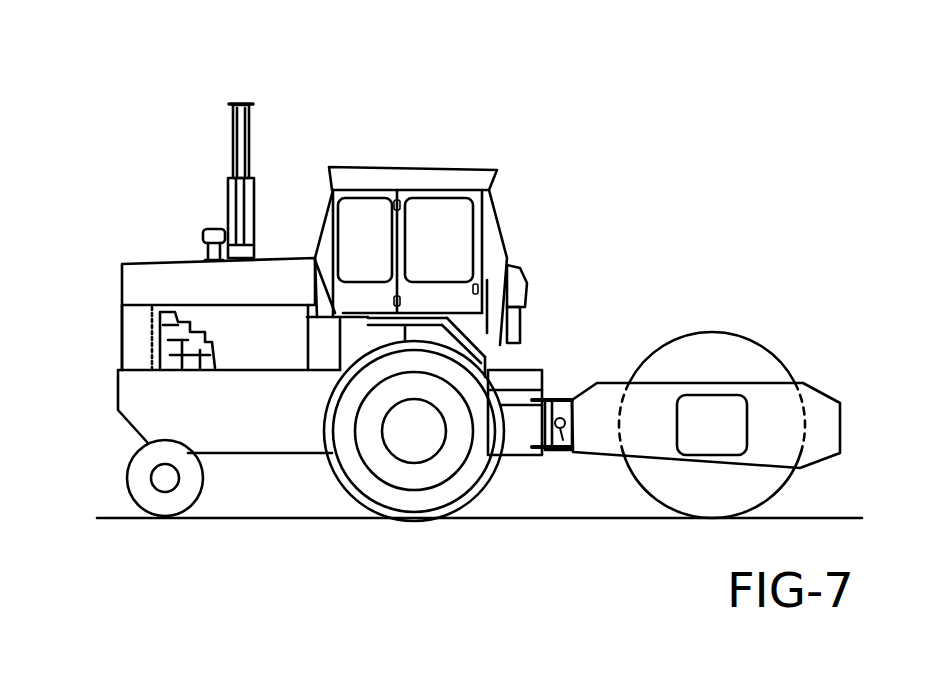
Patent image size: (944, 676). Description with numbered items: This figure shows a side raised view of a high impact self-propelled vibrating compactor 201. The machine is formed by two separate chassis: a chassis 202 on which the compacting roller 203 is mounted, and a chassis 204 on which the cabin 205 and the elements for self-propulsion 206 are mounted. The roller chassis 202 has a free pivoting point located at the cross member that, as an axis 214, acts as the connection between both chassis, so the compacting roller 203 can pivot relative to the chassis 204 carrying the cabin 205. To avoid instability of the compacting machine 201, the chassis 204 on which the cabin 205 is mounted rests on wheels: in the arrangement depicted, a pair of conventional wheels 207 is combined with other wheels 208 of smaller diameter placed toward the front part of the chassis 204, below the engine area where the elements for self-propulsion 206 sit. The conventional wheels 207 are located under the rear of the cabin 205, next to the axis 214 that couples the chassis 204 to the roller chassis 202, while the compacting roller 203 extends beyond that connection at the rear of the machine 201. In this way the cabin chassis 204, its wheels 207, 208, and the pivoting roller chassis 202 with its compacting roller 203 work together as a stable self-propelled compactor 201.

The high impact self-propelled vibrating compactor 201 is at (590, 300).
The chassis 202 is at (807, 388).
The compacting roller 203 is at (685, 332).
The chassis 204 is at (252, 453).
The cabin 205 is at (403, 167).
The elements for self-propulsion 206 is at (182, 312).
The conventional wheels 207 is at (375, 520).
The smaller diameter wheels 208 is at (158, 503).
The axis 214 is at (565, 447).